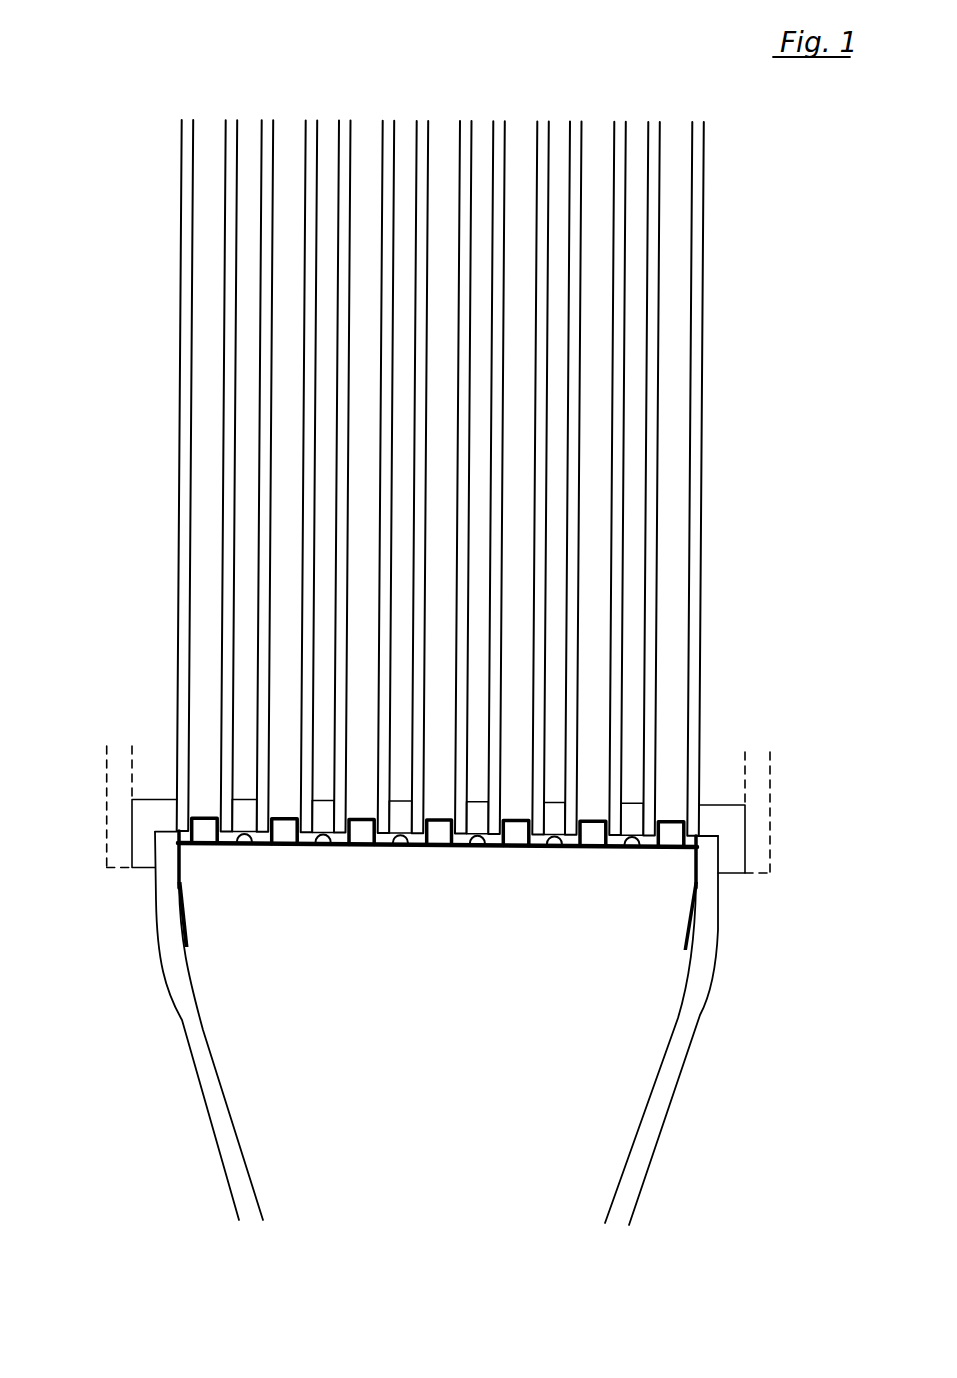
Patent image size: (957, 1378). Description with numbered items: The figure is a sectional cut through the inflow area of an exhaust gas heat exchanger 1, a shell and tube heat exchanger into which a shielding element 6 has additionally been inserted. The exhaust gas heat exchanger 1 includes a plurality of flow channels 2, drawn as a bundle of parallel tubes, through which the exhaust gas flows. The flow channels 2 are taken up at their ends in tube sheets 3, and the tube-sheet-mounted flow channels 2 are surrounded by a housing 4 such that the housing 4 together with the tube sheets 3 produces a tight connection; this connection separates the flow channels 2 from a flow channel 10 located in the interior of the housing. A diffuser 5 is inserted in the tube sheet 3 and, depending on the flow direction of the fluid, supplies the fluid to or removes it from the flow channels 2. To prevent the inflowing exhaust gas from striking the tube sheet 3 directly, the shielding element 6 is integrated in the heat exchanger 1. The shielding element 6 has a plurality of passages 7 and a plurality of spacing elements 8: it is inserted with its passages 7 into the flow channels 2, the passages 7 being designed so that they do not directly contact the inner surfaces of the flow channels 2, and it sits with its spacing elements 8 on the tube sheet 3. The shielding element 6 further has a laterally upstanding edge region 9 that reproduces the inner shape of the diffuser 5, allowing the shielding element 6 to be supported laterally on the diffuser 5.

The exhaust gas heat exchanger 1 is at (713, 488).
The flow channels 2 is at (678, 622).
The tube sheets 3 is at (626, 816).
The housing 4 is at (757, 798).
The diffuser 5 is at (707, 950).
The shielding element 6 is at (690, 910).
The passages 7 is at (198, 813).
The spacing elements 8 is at (240, 847).
The laterally upstanding edge region 9 is at (178, 914).
The flow channel 10 is at (632, 358).